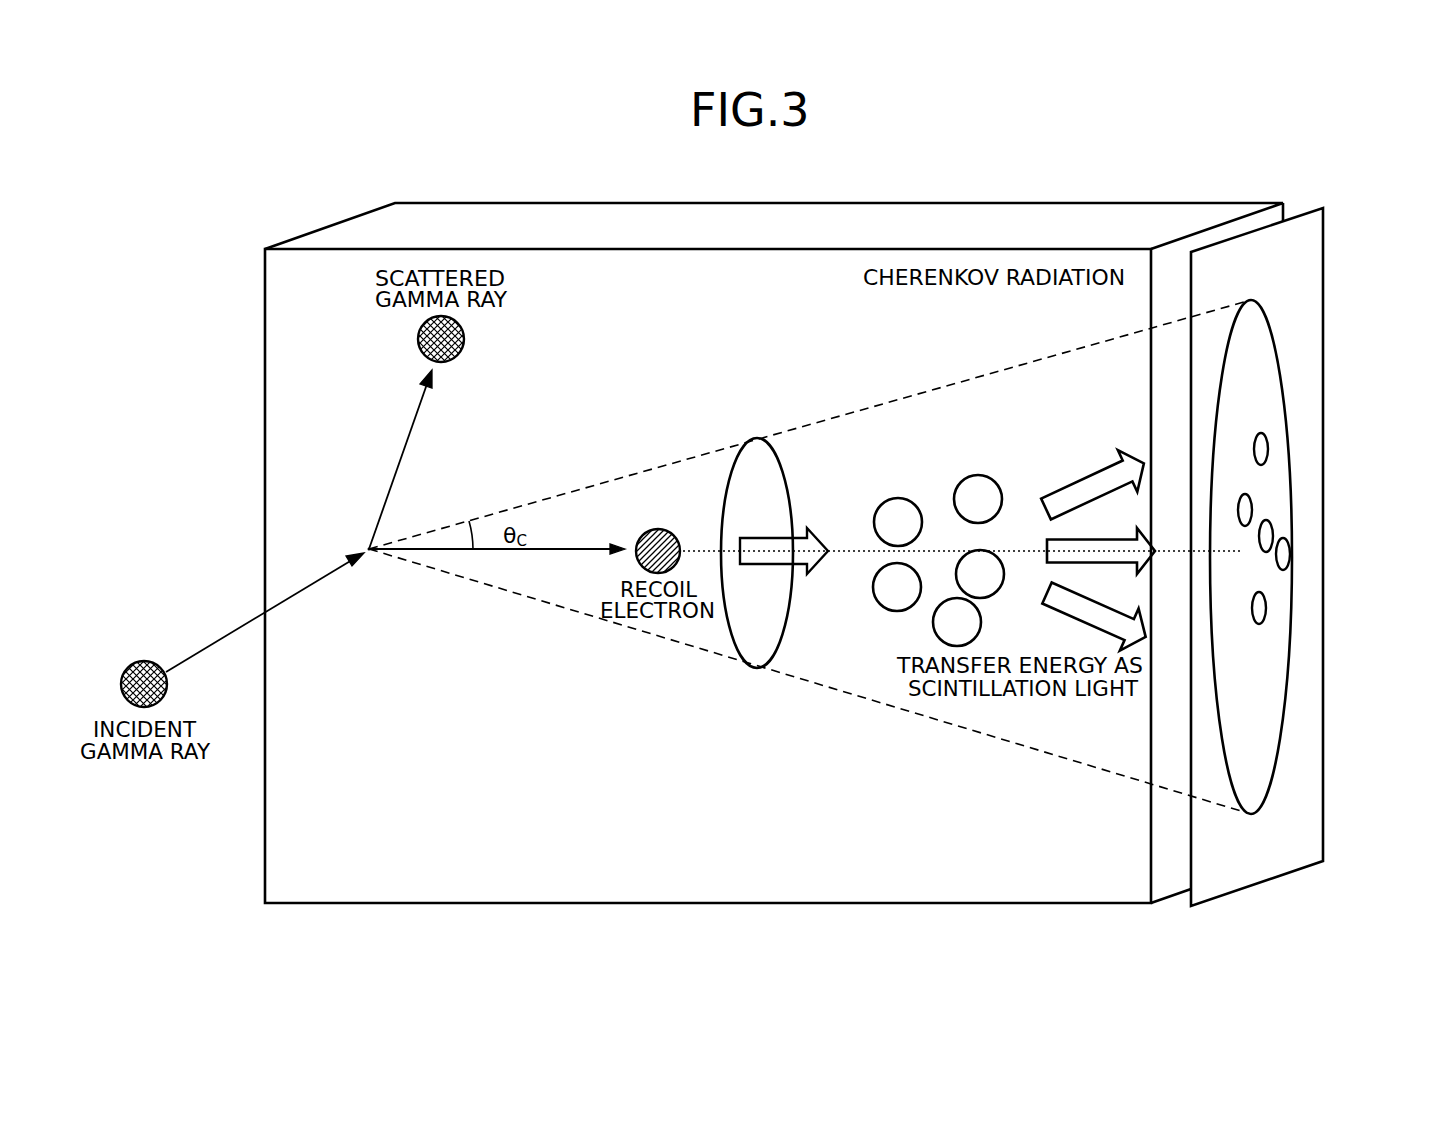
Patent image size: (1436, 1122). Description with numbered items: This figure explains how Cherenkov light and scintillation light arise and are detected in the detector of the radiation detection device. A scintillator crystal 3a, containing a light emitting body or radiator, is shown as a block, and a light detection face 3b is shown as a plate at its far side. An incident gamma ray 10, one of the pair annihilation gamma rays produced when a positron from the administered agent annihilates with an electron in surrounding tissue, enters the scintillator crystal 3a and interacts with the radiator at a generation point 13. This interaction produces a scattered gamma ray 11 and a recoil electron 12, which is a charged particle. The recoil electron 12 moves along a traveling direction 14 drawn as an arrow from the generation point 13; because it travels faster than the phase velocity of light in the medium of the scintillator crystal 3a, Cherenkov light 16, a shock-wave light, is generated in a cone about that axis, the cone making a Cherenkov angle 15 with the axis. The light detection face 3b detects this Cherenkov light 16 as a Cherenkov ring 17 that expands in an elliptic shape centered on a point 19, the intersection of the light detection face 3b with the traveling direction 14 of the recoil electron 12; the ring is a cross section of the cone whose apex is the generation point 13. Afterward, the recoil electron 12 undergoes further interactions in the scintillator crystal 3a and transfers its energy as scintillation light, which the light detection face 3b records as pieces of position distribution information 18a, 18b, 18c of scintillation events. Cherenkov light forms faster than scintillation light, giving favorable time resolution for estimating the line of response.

The scintillator crystal 3a is at (645, 250).
The light detection face 3b is at (1275, 261).
The incident gamma ray 10 is at (143, 660).
The scattered gamma ray 11 is at (418, 335).
The recoil electron 12 is at (660, 527).
The generation point of the charged particle 13 is at (363, 558).
The recoil electron travel direction 14 is at (515, 553).
The Cherenkov angle 15 is at (475, 537).
The Cherenkov light 16 is at (735, 467).
The Cherenkov ring 17 is at (1281, 346).
The position distribution information 18a is at (1268, 445).
The position distribution information 18b is at (1252, 505).
The position distribution information 18c is at (1286, 538).
The point 19 is at (1243, 551).